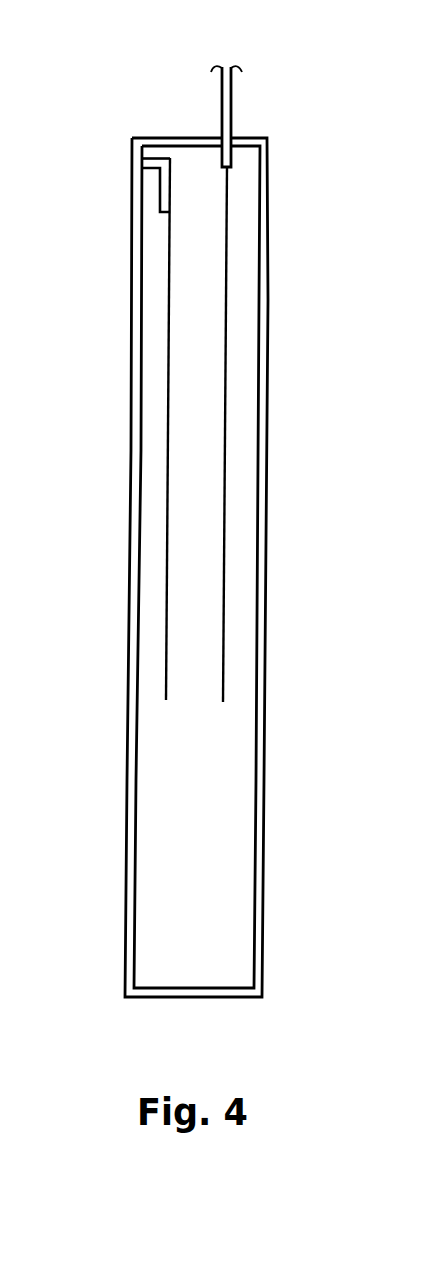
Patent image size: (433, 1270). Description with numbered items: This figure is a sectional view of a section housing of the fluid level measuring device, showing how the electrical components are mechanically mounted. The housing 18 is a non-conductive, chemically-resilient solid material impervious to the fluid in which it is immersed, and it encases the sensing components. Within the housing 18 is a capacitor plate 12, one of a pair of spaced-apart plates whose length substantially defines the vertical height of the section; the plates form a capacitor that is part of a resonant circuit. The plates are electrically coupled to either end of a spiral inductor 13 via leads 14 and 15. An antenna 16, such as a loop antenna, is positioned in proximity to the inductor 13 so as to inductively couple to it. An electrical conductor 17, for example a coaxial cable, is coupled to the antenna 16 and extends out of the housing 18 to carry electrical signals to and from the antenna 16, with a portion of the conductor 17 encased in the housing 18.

The capacitor plate 12 is at (236, 567).
The spiral inductor 13 is at (119, 429).
The lead 14 is at (119, 130).
The lead 15 is at (119, 206).
The antenna 16 is at (282, 434).
The electrical conductor 17 is at (264, 99).
The housing 18 is at (232, 567).